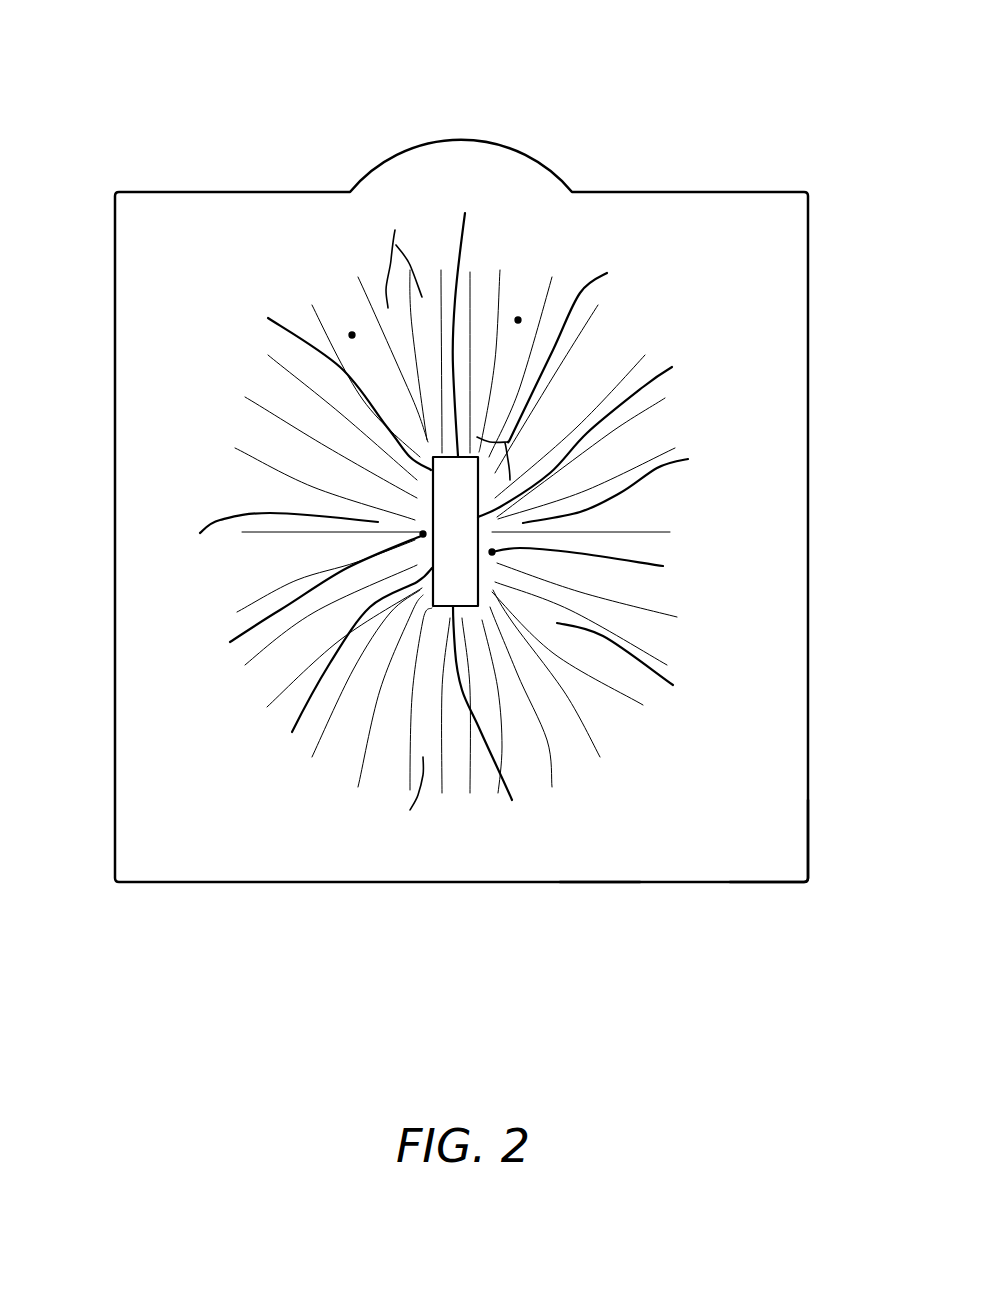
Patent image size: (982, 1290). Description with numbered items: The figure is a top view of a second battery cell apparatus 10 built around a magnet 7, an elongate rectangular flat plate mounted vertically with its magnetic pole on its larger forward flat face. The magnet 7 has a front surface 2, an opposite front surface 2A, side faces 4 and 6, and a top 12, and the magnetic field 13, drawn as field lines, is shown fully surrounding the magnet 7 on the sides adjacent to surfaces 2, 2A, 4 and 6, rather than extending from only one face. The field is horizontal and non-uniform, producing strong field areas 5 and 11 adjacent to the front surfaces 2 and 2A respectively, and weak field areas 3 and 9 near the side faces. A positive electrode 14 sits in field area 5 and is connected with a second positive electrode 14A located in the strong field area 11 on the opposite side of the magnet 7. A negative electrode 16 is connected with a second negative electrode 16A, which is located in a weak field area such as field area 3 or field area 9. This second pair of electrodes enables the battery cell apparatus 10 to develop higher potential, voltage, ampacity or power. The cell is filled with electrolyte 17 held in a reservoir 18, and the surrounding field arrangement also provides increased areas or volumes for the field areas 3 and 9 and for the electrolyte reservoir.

The battery cell apparatus 10 is at (800, 164).
The front surface 2 is at (335, 380).
The front surface 2A is at (600, 425).
The field area 3 is at (402, 248).
The side face 4 is at (455, 389).
The field area 5 is at (278, 532).
The side face 6 is at (490, 721).
The magnet 7 is at (556, 359).
The field area 9 is at (404, 797).
The field area 11 is at (631, 483).
The top 12 is at (344, 670).
The magnetic field 13 is at (639, 665).
The electrode 14 is at (302, 600).
The electrode 14A is at (612, 567).
The electrode 16 is at (352, 335).
The electrode 16A is at (518, 320).
The electrolyte 17 is at (693, 843).
The reservoir 18 is at (598, 882).